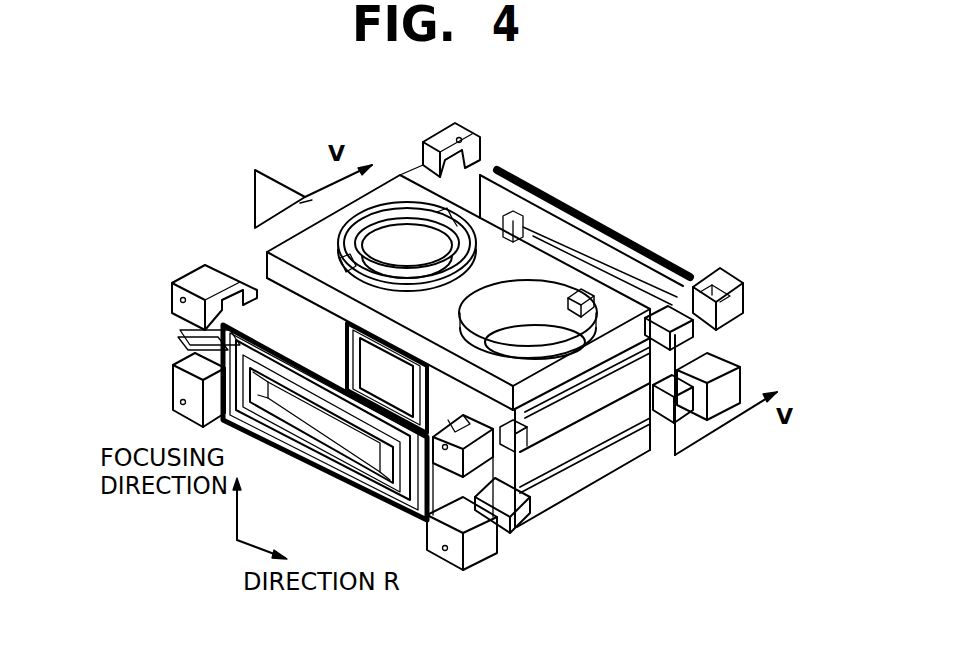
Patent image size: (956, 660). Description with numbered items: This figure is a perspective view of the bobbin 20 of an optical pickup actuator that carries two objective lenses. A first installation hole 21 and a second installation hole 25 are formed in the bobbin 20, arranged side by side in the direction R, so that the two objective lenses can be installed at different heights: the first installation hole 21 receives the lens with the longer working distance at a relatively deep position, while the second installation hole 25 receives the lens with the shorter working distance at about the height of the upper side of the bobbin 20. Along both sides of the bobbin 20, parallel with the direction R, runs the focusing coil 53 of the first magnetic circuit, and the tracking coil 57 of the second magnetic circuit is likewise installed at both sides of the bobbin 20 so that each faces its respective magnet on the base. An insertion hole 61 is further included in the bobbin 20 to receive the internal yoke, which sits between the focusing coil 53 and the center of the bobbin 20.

The bobbin 20 is at (283, 253).
The first installation hole 21 is at (396, 240).
The second installation hole 25 is at (540, 307).
The focusing coil 53 is at (673, 267).
The tracking coil 57 is at (352, 448).
The insertion hole 61 is at (278, 312).